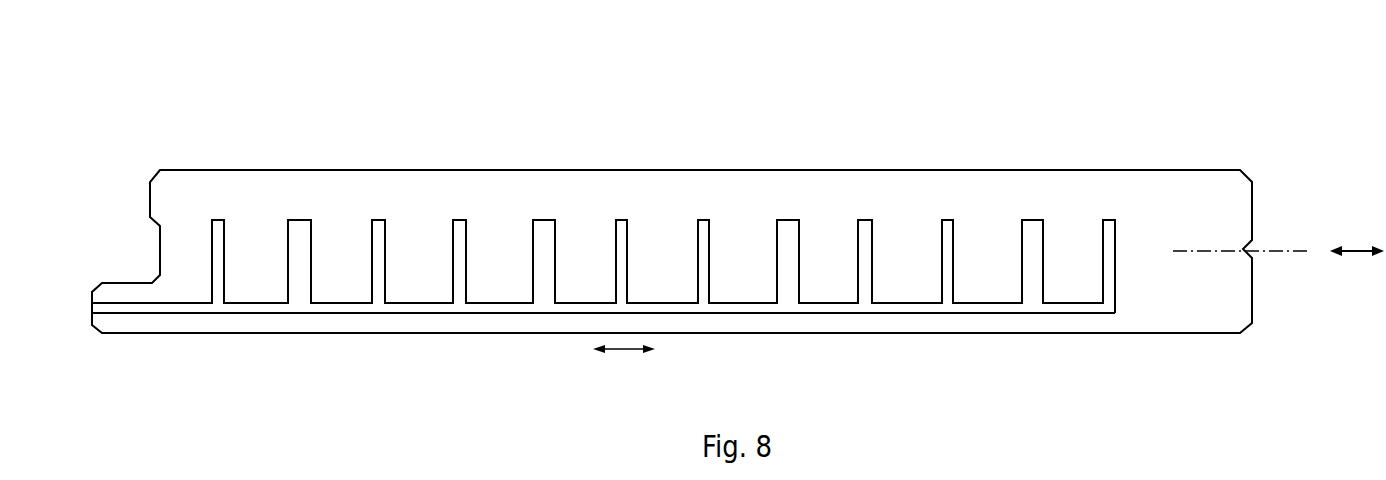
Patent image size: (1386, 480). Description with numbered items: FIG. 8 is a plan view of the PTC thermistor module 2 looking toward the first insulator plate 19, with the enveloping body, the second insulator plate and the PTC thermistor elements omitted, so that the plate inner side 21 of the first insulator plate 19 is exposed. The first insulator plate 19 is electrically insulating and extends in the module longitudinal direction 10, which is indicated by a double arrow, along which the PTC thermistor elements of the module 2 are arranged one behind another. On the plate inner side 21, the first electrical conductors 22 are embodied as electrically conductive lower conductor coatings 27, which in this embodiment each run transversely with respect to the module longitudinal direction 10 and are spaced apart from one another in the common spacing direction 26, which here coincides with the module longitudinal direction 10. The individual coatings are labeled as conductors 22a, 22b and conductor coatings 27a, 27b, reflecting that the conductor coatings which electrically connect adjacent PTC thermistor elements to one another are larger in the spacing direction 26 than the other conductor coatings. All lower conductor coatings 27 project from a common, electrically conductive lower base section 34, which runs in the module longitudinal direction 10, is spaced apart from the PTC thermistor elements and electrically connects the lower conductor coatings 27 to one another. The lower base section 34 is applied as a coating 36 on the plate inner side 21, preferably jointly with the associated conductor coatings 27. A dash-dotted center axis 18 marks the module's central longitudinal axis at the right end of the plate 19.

The PTC thermistor module 2 is at (1282, 141).
The module longitudinal direction 10 is at (1360, 247).
The central axis 18 is at (1294, 247).
The first insulator plate 19 is at (693, 156).
The plate inner side 21 is at (766, 181).
The first electrical conductor 22 is at (603, 201).
The first cooling fin 22a is at (288, 196).
The second cooling fin 22b is at (336, 214).
The lower conductor coating 27 is at (603, 201).
The first rib 27a is at (219, 224).
The second rib 27b is at (297, 226).
The spacing direction 26 is at (626, 353).
The lower base section 34 is at (603, 349).
The coating 36 is at (425, 306).